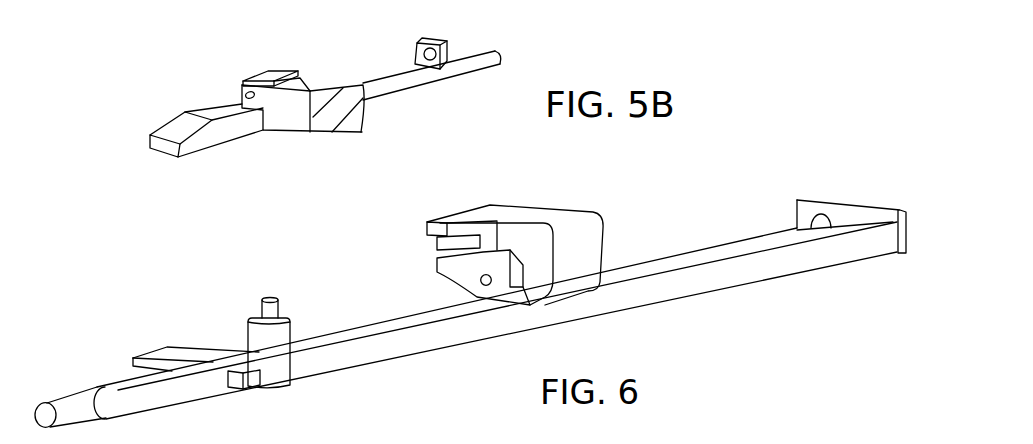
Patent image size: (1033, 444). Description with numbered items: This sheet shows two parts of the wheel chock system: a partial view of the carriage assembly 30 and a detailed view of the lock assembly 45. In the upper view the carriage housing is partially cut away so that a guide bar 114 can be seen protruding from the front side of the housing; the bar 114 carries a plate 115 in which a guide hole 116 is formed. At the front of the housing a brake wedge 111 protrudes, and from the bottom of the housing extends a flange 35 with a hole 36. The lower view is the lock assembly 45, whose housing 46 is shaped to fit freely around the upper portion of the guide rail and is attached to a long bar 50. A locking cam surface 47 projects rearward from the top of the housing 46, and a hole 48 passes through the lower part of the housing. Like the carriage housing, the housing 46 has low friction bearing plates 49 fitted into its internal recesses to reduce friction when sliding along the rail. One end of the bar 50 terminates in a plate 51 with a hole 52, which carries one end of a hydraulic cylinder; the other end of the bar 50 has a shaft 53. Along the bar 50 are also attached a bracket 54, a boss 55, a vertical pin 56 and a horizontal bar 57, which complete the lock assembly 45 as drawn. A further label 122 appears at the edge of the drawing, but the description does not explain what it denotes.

In FIG. 5B, the carriage assembly 30 is at (327, 133).
In FIG. 5B, the brake wedge 111 is at (245, 138).
In FIG. 5B, the flange 35 is at (277, 44).
In FIG. 5B, the hole 36 is at (224, 6).
In FIG. 5B, the guide bar 114 is at (398, 92).
In FIG. 5B, the plate 115 is at (432, 40).
In FIG. 5B, the guide hole 116 is at (417, 58).
In FIG. 6, the lock assembly 45 is at (525, 228).
In FIG. 6, the housing 46 is at (528, 207).
In FIG. 6, the locking cam surface 47 is at (430, 234).
In FIG. 6, the hole 48 is at (470, 278).
In FIG. 6, the low friction bearing plates 49 is at (440, 250).
In FIG. 6, the bar 50 is at (667, 260).
In FIG. 6, the plate 51 is at (813, 200).
In FIG. 6, the hole 52 is at (804, 222).
In FIG. 6, the shaft 53 is at (68, 395).
In FIG. 6, the bracket 54 is at (250, 392).
In FIG. 6, the boss 55 is at (292, 330).
In FIG. 6, the vertical pin 56 is at (260, 312).
In FIG. 6, the horizontal bar 57 is at (173, 350).
In FIG. 6, the element 122 is at (366, 438).